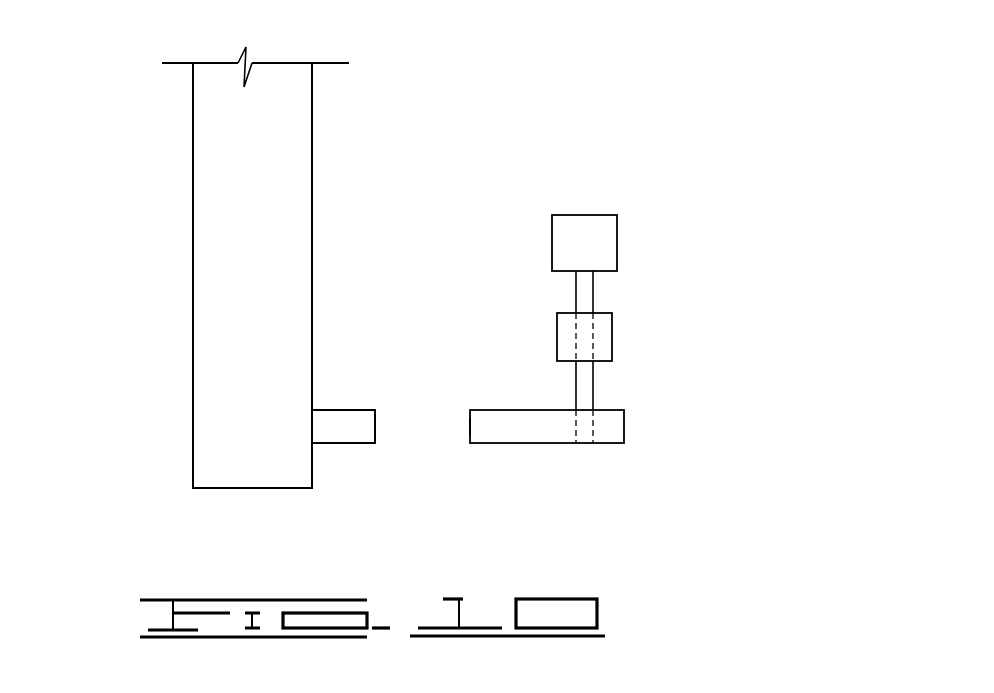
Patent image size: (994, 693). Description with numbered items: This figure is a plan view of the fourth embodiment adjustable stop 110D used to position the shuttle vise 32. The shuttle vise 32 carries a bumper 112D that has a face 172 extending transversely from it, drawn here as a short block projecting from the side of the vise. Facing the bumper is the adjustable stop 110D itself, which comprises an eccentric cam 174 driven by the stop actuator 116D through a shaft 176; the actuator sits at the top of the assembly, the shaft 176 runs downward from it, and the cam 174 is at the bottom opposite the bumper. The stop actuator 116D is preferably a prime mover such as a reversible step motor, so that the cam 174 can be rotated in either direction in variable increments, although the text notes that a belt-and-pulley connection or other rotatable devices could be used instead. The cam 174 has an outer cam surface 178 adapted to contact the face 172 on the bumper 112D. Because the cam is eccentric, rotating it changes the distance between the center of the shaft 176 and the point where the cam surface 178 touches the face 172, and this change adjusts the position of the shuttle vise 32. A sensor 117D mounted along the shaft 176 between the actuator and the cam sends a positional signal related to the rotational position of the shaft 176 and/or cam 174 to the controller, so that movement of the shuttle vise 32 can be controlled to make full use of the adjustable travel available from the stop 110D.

The shuttle vise 32 is at (207, 152).
The bumper 112D is at (345, 437).
The face 172 is at (376, 425).
The adjustable stop 110D is at (437, 172).
The stop actuator 116D is at (586, 222).
The sensor 117D is at (612, 322).
The shaft 176 is at (594, 388).
The eccentric cam 174 is at (547, 443).
The outer cam surface 178 is at (469, 427).